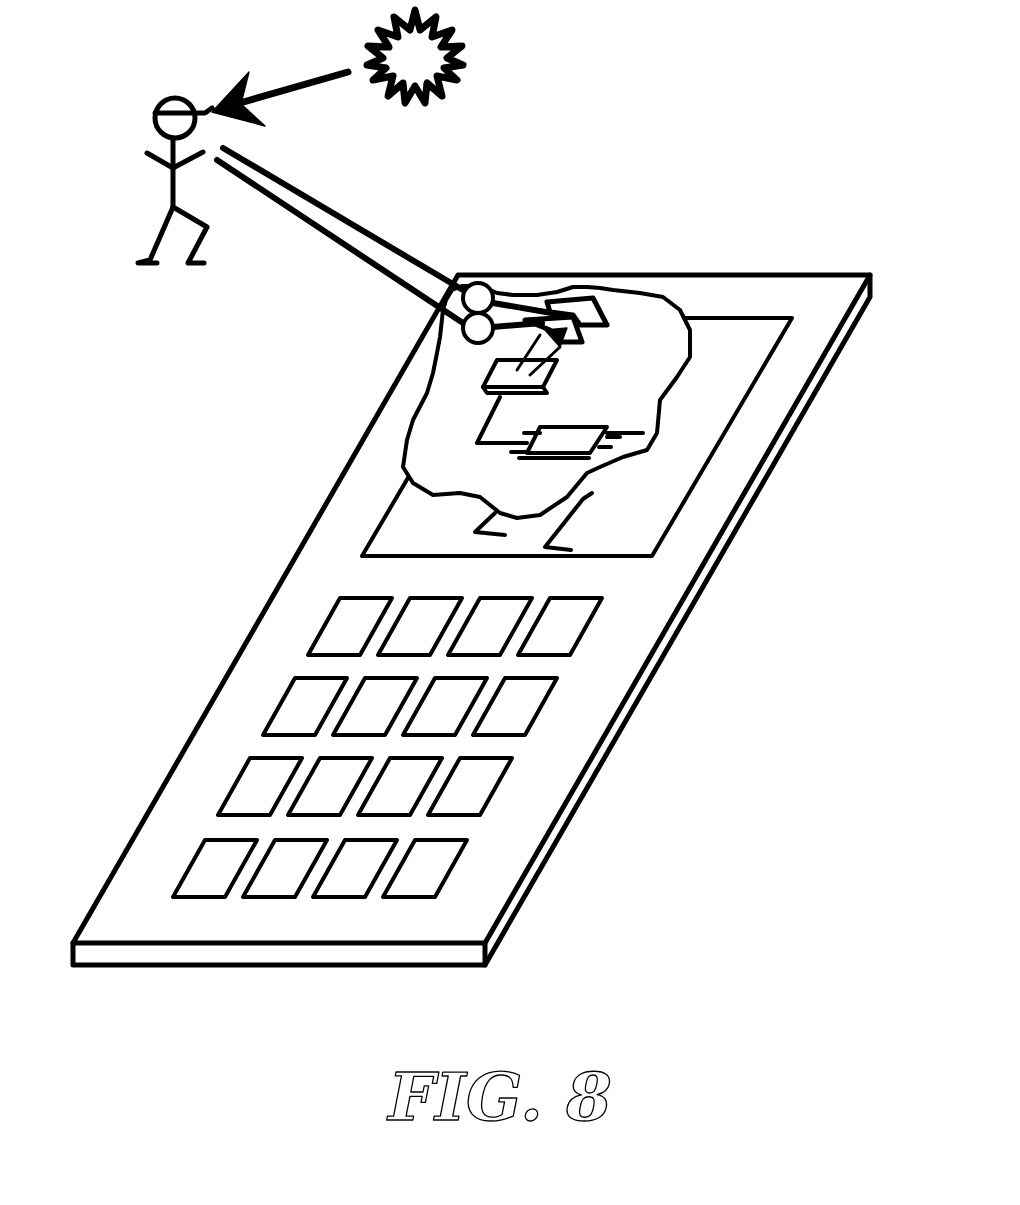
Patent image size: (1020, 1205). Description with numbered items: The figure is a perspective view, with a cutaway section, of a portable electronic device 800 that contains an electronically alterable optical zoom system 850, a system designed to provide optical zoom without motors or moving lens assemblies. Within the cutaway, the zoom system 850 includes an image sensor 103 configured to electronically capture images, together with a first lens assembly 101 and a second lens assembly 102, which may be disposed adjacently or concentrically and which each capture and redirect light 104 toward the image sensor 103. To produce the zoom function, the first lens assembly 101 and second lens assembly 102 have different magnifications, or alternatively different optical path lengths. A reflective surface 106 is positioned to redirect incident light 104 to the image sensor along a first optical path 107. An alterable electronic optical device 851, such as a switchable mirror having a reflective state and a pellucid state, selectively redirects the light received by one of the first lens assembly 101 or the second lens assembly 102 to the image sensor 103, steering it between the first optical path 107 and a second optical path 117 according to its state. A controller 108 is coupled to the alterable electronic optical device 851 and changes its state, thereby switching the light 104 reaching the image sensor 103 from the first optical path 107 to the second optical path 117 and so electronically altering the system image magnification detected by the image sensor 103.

The portable electronic device 800 is at (678, 572).
The electronically alterable optical zoom system 850 is at (412, 382).
The alterable electronic optical device 851 is at (572, 342).
The first lens assembly 101 is at (478, 282).
The second lens assembly 102 is at (462, 338).
The image sensor 103 is at (484, 392).
The light 104 is at (323, 230).
The reflective surface 106 is at (583, 298).
The first optical path 107 is at (517, 314).
The controller 108 is at (557, 437).
The second optical path 117 is at (513, 335).